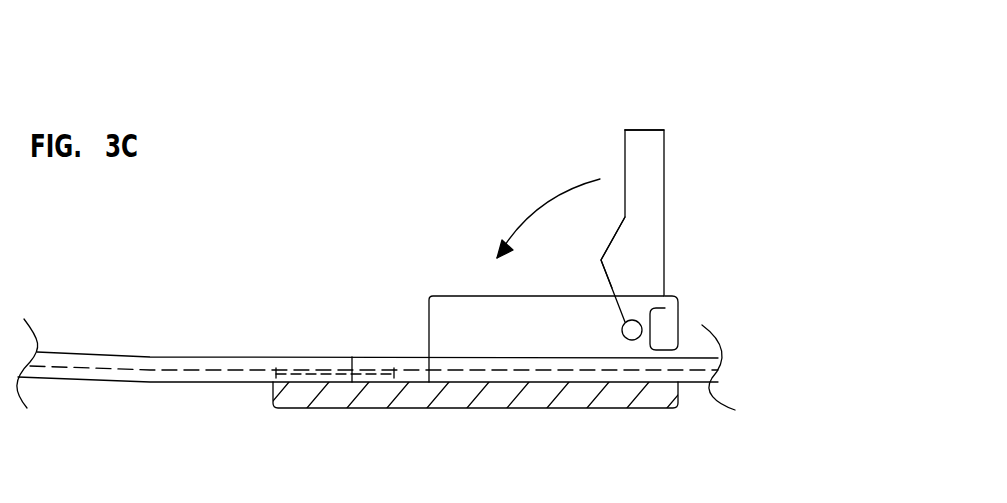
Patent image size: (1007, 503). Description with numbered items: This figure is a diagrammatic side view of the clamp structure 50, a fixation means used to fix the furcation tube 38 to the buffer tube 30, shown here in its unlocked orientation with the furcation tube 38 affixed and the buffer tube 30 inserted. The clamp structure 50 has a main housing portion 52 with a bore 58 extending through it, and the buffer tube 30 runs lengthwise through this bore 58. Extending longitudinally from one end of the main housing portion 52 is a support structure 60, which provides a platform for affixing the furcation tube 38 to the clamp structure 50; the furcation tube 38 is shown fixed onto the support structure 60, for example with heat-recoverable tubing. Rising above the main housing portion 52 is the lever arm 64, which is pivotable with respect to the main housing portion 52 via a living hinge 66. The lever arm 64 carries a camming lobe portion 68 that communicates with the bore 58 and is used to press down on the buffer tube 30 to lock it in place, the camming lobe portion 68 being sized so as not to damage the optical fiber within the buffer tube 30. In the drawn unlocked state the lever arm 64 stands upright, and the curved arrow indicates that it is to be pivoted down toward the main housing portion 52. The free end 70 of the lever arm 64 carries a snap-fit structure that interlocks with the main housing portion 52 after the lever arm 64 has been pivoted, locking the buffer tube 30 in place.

The buffer tube 30 is at (502, 382).
The furcation tube 38 is at (140, 355).
The clamp structure 50 is at (543, 419).
The main housing portion 52 is at (441, 304).
The bore 58 is at (679, 353).
The support structure 60 is at (332, 397).
The lever arm 64 is at (658, 175).
The living hinge 66 is at (643, 329).
The camming lobe portion 68 is at (600, 260).
The free end 70 is at (636, 128).